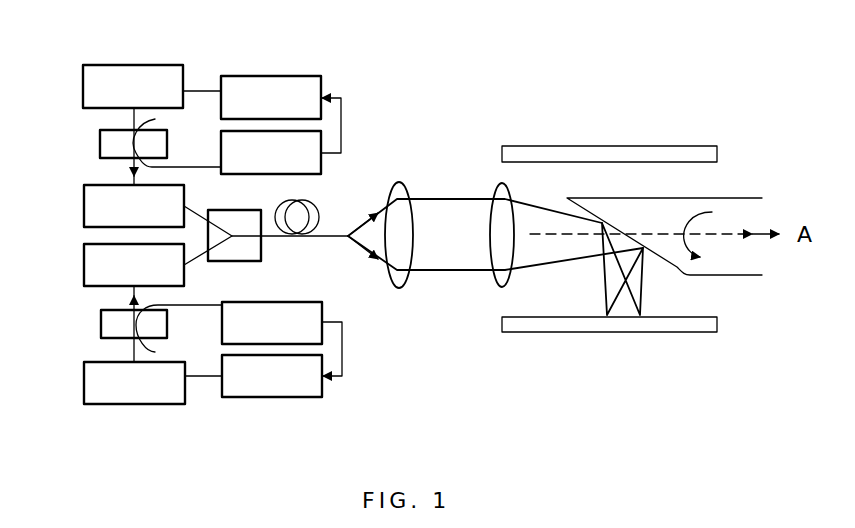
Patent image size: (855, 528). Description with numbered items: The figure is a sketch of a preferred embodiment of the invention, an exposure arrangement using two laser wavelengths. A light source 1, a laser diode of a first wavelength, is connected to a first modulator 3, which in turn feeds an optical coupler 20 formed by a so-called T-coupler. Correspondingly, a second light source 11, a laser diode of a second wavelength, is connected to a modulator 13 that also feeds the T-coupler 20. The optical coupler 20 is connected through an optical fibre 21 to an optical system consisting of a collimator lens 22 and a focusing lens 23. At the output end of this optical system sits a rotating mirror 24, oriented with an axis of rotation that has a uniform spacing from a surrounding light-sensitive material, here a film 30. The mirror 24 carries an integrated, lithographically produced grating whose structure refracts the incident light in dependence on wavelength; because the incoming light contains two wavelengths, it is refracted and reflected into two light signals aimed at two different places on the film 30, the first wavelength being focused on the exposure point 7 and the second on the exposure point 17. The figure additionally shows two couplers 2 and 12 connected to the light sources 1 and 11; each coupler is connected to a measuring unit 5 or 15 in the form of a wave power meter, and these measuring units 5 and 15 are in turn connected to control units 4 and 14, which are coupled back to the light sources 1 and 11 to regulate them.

The light source 1 is at (97, 65).
The coupler 2 is at (100, 142).
The first modulator 3 is at (84, 206).
The control unit 4 is at (280, 76).
The measuring unit 5 is at (322, 163).
The exposure point 7 is at (610, 320).
The light source 11 is at (113, 404).
The coupler 12 is at (101, 325).
The first modulator 13 is at (84, 264).
The control unit 14 is at (300, 397).
The measuring unit 15 is at (322, 308).
The exposure point 17 is at (647, 310).
The optical coupler 20 is at (261, 252).
The optical fibre 21 is at (320, 206).
The collimator lens 22 is at (400, 183).
The focusing lens 23 is at (497, 183).
The rotating mirror 24 is at (675, 267).
The film 30 is at (534, 146).